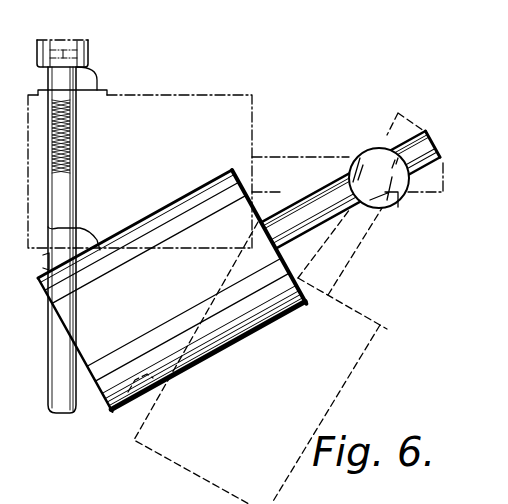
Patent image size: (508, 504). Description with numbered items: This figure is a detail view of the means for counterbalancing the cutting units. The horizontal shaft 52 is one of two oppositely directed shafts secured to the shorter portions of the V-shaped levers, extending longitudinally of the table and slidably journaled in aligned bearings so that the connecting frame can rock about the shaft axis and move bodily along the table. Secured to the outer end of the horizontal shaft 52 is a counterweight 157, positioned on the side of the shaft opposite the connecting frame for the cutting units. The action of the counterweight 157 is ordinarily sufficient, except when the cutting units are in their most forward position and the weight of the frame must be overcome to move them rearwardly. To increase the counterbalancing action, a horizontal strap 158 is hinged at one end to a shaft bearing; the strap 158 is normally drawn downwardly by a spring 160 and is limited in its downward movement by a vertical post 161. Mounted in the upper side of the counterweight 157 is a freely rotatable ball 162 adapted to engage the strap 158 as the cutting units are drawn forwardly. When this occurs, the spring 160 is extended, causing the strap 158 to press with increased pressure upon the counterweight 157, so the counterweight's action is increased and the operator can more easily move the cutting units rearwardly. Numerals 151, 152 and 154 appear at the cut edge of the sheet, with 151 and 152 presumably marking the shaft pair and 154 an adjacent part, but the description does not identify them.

The horizontal shaft 52 is at (370, 153).
The counterweight 157 is at (257, 212).
The horizontal strap 158 is at (90, 48).
The spring 160 is at (47, 175).
The vertical post 161 is at (58, 345).
The freely rotatable ball 162 is at (93, 68).
The bracket 152 is at (9, 76).
The bracket plate 151 is at (6, 142).
The mounting flange 154 is at (4, 236).